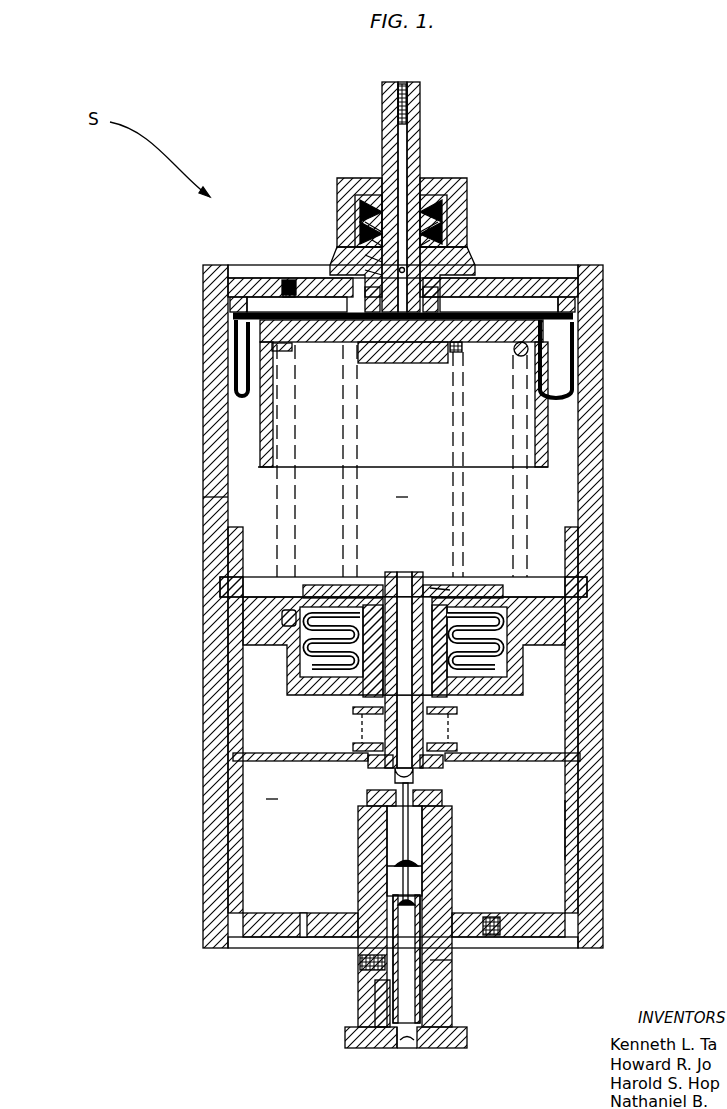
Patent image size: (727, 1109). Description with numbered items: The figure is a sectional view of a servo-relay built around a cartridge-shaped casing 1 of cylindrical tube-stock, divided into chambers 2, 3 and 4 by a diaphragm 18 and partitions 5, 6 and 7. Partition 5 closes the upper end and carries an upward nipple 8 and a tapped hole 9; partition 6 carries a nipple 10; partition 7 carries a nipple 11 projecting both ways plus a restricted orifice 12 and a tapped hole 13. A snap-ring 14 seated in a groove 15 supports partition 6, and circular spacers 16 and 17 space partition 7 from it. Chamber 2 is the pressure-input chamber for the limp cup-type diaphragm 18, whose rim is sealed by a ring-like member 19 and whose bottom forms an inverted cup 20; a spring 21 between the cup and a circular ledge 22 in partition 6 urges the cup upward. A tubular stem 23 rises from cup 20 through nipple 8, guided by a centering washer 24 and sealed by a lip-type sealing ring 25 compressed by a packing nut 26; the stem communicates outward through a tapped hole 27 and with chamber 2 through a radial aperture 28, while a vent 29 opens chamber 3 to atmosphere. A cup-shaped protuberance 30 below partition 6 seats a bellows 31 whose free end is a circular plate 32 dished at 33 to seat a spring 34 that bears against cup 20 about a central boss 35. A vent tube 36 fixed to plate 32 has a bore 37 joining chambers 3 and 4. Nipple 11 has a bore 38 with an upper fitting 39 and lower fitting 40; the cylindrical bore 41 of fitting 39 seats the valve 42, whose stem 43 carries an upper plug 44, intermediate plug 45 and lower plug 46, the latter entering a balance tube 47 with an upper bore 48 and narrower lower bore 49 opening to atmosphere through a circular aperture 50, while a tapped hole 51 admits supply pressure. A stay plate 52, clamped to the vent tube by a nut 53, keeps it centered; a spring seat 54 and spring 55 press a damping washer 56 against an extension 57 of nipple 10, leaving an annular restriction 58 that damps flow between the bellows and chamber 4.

The casing 1 is at (600, 382).
The chamber 2 is at (543, 290).
The chamber 3 is at (402, 461).
The chamber 4 is at (272, 790).
The partition 5 is at (520, 282).
The partition 6 is at (560, 625).
The partition 7 is at (565, 940).
The nipple 8 is at (467, 265).
The tapped hole 9 is at (290, 280).
The nipple 10 is at (450, 580).
The nipple 11 is at (450, 960).
The restricted orifice 12 is at (300, 935).
The tapped hole 13 is at (493, 935).
The snap-ring 14 is at (232, 552).
The groove 15 is at (230, 590).
The spacer 16 is at (590, 690).
The spacer 17 is at (578, 826).
The diaphragm 18 is at (238, 395).
The ring-like member 19 is at (283, 295).
The inverted cup 20 is at (262, 432).
The spring 21 is at (516, 353).
The circular ledge 22 is at (290, 622).
The tubular stem 23 is at (420, 130).
The centering washer 24 is at (455, 235).
The sealing ring 25 is at (432, 200).
The packing nut 26 is at (350, 185).
The tapped hole 27 is at (398, 82).
The radial aperture 28 is at (378, 265).
The vent 29 is at (215, 497).
The cup-shaped protuberance 30 is at (300, 670).
The bellows 31 is at (290, 640).
The circular plate 32 is at (500, 595).
The dished seat 33 is at (460, 590).
The spring 34 is at (455, 352).
The central circular boss 35 is at (368, 362).
The vent tube 36 is at (425, 737).
The cylindrical bore 37 is at (400, 575).
The bore 38 is at (385, 866).
The fitting 39 is at (440, 797).
The fitting 40 is at (467, 1038).
The cylindrical bore 41 is at (395, 830).
The valve 42 is at (450, 890).
The stem 43 is at (410, 830).
The upper plug 44 is at (390, 778).
The intermediate plug 45 is at (425, 863).
The lower plug 46 is at (362, 960).
The balance tube 47 is at (395, 1030).
The upper cylindrical bore 48 is at (392, 885).
The lower bore 49 is at (420, 1048).
The circular aperture 50 is at (405, 1045).
The tapped hole 51 is at (375, 978).
The stay plate 52 is at (580, 760).
The nut 53 is at (440, 765).
The spring seat 54 is at (360, 745).
The spring 55 is at (450, 722).
The damping washer 56 is at (455, 715).
The extension 57 is at (455, 710).
The annular restriction 58 is at (370, 722).